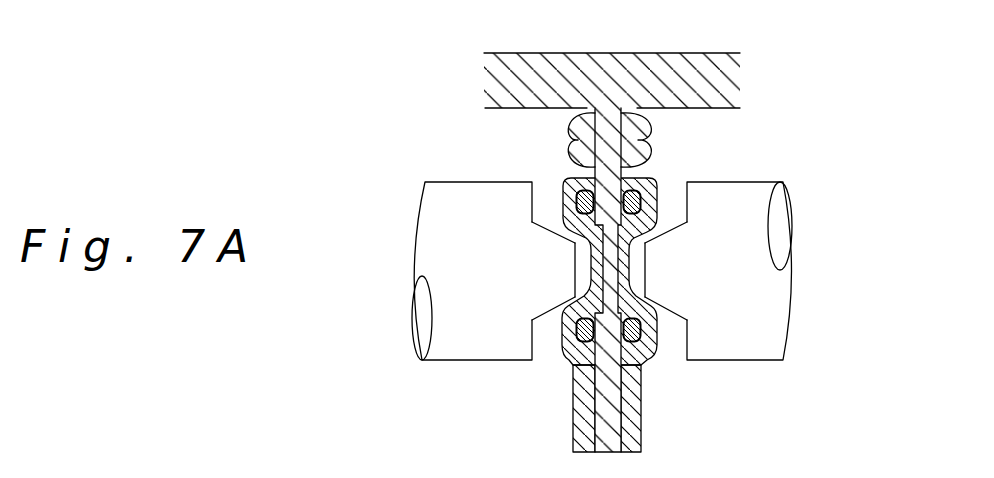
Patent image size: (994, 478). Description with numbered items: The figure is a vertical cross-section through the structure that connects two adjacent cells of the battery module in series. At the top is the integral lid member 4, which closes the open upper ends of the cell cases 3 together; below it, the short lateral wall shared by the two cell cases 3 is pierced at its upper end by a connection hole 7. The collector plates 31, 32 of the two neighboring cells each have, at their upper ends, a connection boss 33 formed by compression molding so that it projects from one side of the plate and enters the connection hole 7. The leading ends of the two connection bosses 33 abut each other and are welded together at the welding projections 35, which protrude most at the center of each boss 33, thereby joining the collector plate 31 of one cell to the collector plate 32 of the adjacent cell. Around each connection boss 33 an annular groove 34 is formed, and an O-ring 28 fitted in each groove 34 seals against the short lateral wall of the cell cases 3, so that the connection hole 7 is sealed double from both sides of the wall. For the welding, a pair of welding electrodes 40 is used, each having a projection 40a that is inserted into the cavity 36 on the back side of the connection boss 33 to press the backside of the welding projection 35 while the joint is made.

The cell case 3 is at (326, 357).
The integral lid member 4 is at (693, 80).
The connection hole 7 is at (618, 282).
The O-ring 28 is at (563, 207).
The collector plate 31 is at (580, 418).
The collector plate 32 is at (633, 415).
The connection boss 33 is at (567, 318).
The annular groove 34 is at (565, 177).
The welding projection 35 is at (590, 270).
The cavity 36 is at (572, 268).
The welding electrode 40 is at (430, 235).
The projection 40a is at (553, 287).